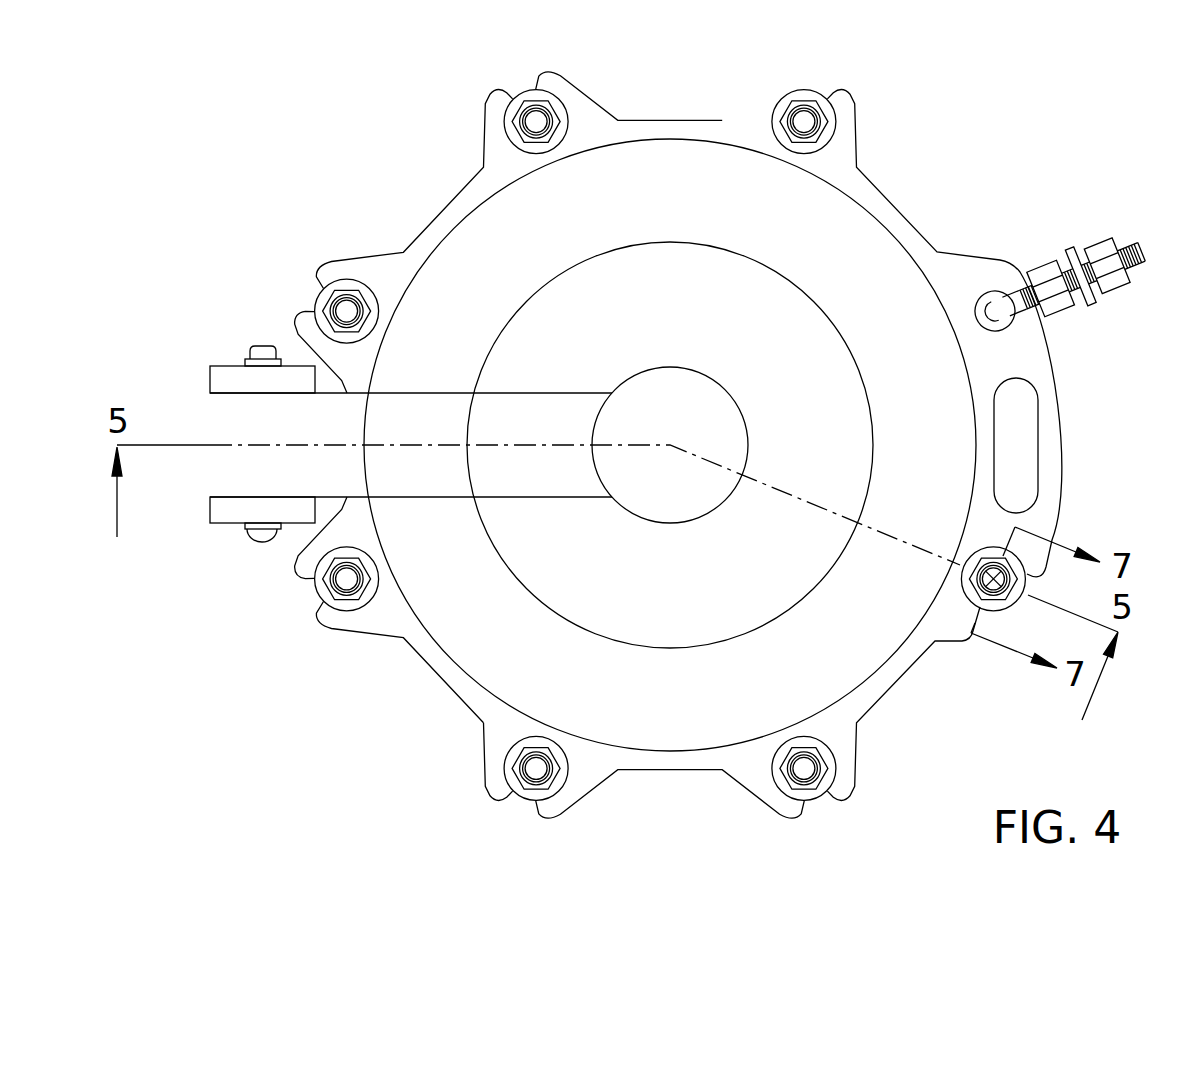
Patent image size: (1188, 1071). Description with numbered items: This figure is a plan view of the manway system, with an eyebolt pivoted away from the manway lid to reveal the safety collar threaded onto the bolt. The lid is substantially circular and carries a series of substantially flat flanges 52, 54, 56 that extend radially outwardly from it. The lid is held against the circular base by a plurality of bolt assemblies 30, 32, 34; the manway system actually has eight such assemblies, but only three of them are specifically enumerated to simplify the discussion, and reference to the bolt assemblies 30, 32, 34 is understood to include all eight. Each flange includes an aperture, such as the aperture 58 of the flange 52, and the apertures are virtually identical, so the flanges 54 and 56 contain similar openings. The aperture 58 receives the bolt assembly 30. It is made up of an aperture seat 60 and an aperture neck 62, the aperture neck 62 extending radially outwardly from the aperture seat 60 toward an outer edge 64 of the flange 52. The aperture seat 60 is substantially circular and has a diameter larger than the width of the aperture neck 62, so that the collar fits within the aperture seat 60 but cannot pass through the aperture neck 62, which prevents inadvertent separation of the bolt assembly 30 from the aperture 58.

The bolt assembly 30 is at (540, 774).
The bolt assembly 32 is at (808, 774).
The bolt assembly 34 is at (1004, 572).
The flange 52 is at (468, 738).
The flange 54 is at (860, 738).
The flange 56 is at (960, 623).
The aperture 58 is at (513, 819).
The aperture seat 60 is at (1024, 345).
The aperture neck 62 is at (1010, 260).
The outer edge 64 is at (490, 792).